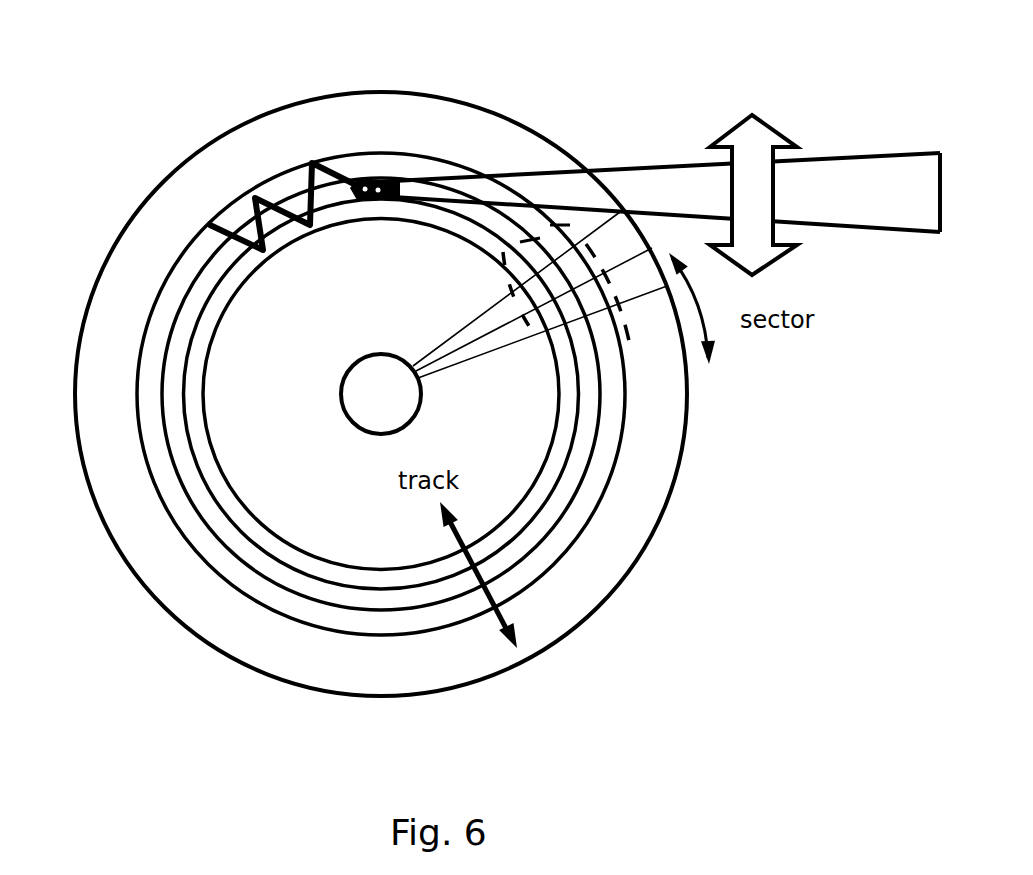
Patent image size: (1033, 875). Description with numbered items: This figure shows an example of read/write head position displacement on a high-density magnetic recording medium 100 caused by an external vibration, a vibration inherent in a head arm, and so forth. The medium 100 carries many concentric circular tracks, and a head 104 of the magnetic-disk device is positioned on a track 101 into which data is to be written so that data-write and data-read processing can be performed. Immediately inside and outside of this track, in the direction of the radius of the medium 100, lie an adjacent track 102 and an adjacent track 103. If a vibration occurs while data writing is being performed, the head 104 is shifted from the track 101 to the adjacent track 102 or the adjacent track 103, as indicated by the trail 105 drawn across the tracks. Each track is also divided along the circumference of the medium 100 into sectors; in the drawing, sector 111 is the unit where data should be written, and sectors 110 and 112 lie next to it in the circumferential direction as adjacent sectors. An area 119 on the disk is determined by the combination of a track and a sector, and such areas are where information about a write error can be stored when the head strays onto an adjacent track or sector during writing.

The medium 100 is at (130, 598).
The track 101 is at (600, 405).
The adjacent track 102 is at (632, 355).
The adjacent track 103 is at (570, 470).
The head 104 is at (398, 176).
The trail 105 is at (205, 212).
The sector 110 is at (490, 303).
The sector 111 is at (443, 343).
The sector 112 is at (444, 392).
The area 119 is at (492, 268).